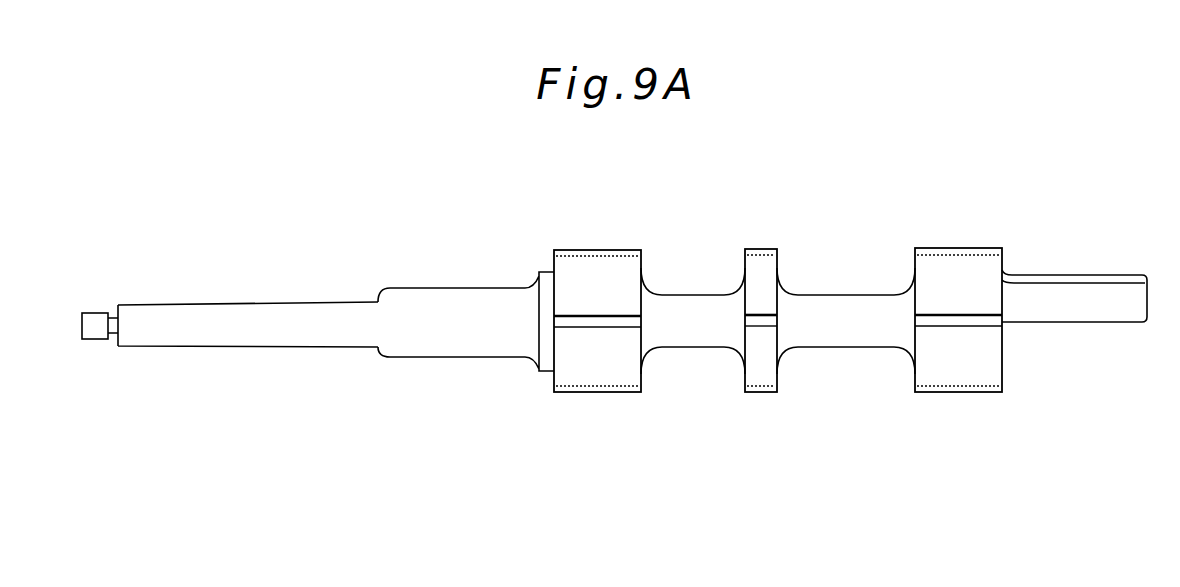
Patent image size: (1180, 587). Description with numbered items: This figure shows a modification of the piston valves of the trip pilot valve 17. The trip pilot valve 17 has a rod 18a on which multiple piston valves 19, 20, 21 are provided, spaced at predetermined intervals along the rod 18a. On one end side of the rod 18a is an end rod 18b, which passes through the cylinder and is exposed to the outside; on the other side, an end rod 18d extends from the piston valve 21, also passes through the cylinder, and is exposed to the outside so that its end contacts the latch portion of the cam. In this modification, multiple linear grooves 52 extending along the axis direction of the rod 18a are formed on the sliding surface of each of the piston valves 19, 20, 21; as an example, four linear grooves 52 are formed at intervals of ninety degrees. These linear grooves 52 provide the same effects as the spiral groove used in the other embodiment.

The trip pilot valve 17 is at (205, 292).
The rod 18a is at (848, 335).
The end rod 18b is at (241, 334).
The end rod 18d is at (1072, 308).
The piston valve 19 is at (642, 266).
The piston valve 20 is at (779, 266).
The piston valve 21 is at (1003, 260).
The linear groove 52 is at (610, 256).